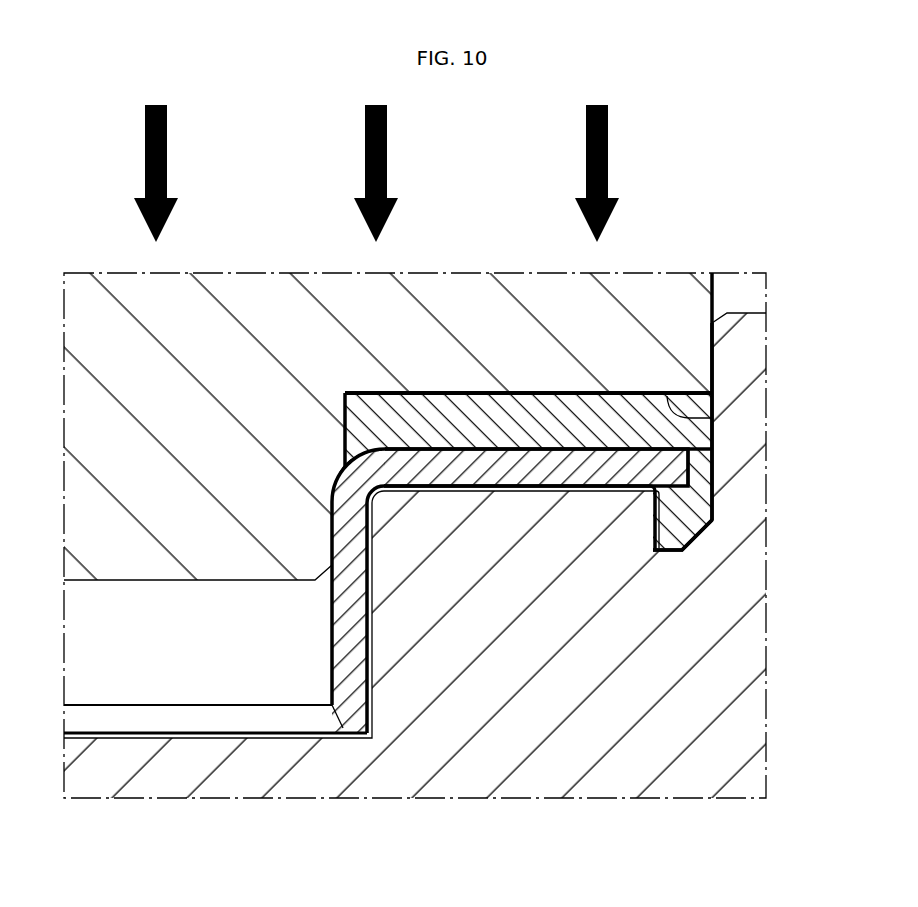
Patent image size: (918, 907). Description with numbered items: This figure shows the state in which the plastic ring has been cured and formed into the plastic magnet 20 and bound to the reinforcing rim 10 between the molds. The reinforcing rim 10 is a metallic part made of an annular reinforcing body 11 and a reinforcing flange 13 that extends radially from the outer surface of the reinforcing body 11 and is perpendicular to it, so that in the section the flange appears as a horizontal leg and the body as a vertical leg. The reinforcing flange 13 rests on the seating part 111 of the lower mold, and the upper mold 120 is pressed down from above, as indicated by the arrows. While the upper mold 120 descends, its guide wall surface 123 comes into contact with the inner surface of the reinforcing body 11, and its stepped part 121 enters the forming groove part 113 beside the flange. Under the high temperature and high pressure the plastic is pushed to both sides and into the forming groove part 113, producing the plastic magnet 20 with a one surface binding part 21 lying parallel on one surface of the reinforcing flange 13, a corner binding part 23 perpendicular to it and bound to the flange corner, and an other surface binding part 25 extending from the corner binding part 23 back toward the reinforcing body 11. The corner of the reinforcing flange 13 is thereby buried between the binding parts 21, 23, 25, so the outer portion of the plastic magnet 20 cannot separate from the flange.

The reinforcing rim 10 is at (548, 854).
The reinforcing body 11 is at (352, 647).
The reinforcing flange 13 is at (527, 465).
The plastic magnet 20 is at (641, 394).
The one surface binding part 21 is at (561, 418).
The corner binding part 23 is at (697, 455).
The other surface binding part 25 is at (704, 511).
The seating part 111 is at (710, 531).
The forming groove part 113 is at (712, 500).
The upper mold 120 is at (298, 337).
The stepped part 121 is at (713, 418).
The guide wall surface 123 is at (338, 530).